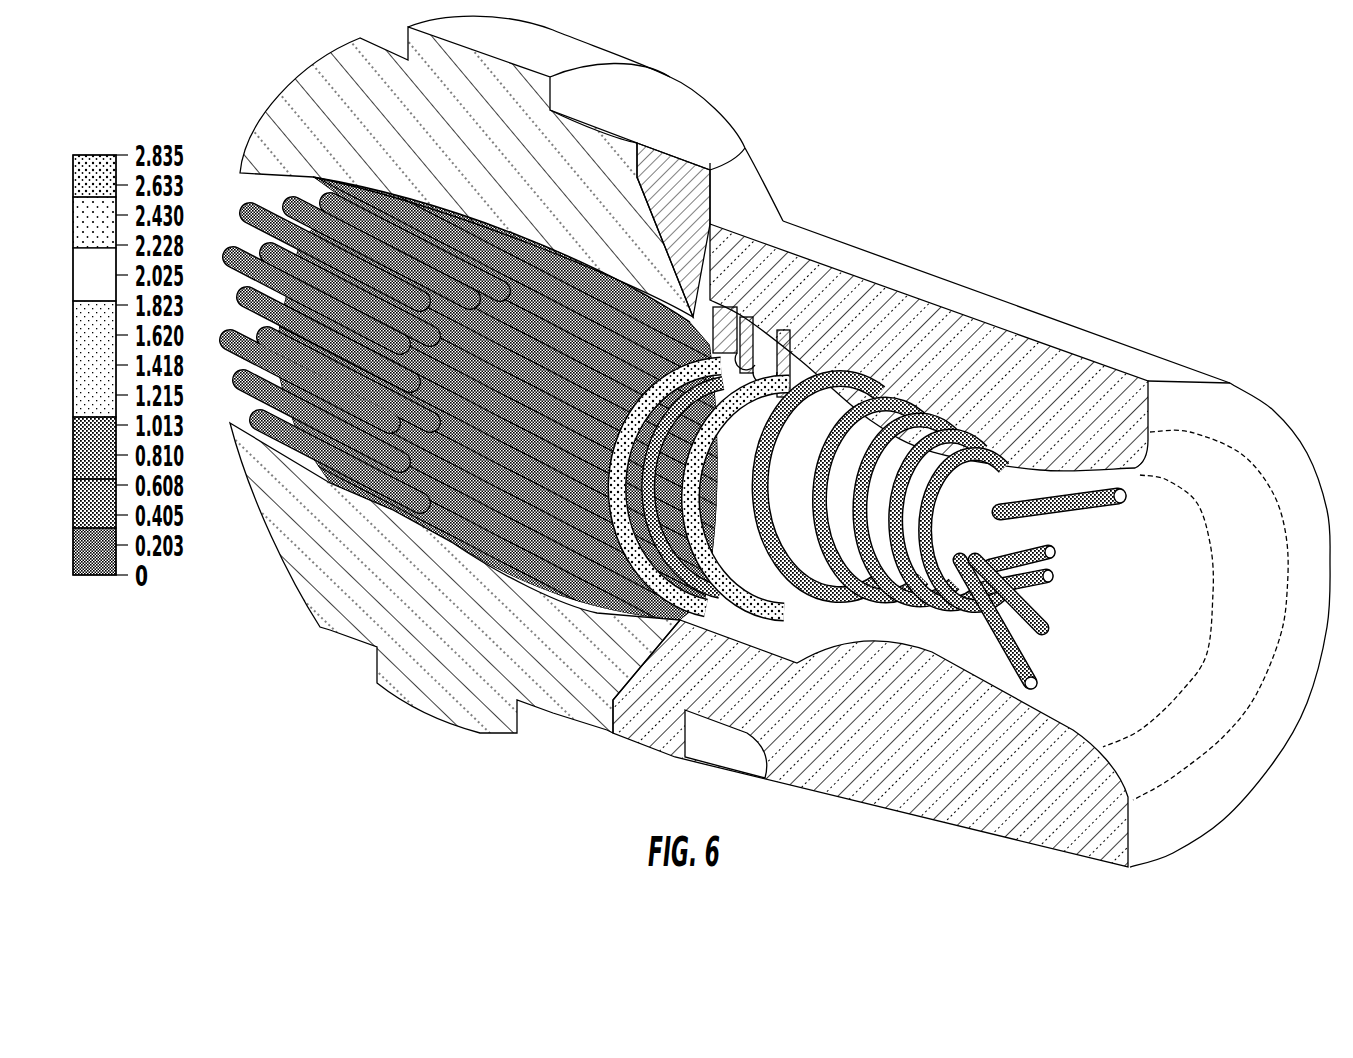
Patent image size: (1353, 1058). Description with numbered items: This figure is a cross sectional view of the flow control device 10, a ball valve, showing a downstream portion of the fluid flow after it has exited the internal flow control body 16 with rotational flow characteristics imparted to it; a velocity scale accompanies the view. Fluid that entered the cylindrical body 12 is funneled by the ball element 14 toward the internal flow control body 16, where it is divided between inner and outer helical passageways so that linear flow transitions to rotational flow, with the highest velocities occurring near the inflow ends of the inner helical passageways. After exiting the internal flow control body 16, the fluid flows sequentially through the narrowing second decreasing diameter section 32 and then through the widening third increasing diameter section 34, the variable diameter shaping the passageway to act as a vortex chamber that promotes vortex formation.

The flow control device 10 is at (963, 143).
The cylindrical body 12 is at (1068, 295).
The ball element 14 is at (677, 67).
The internal flow control body 16 is at (762, 338).
The second decreasing diameter section 32 is at (932, 653).
The third increasing diameter section 34 is at (1129, 932).